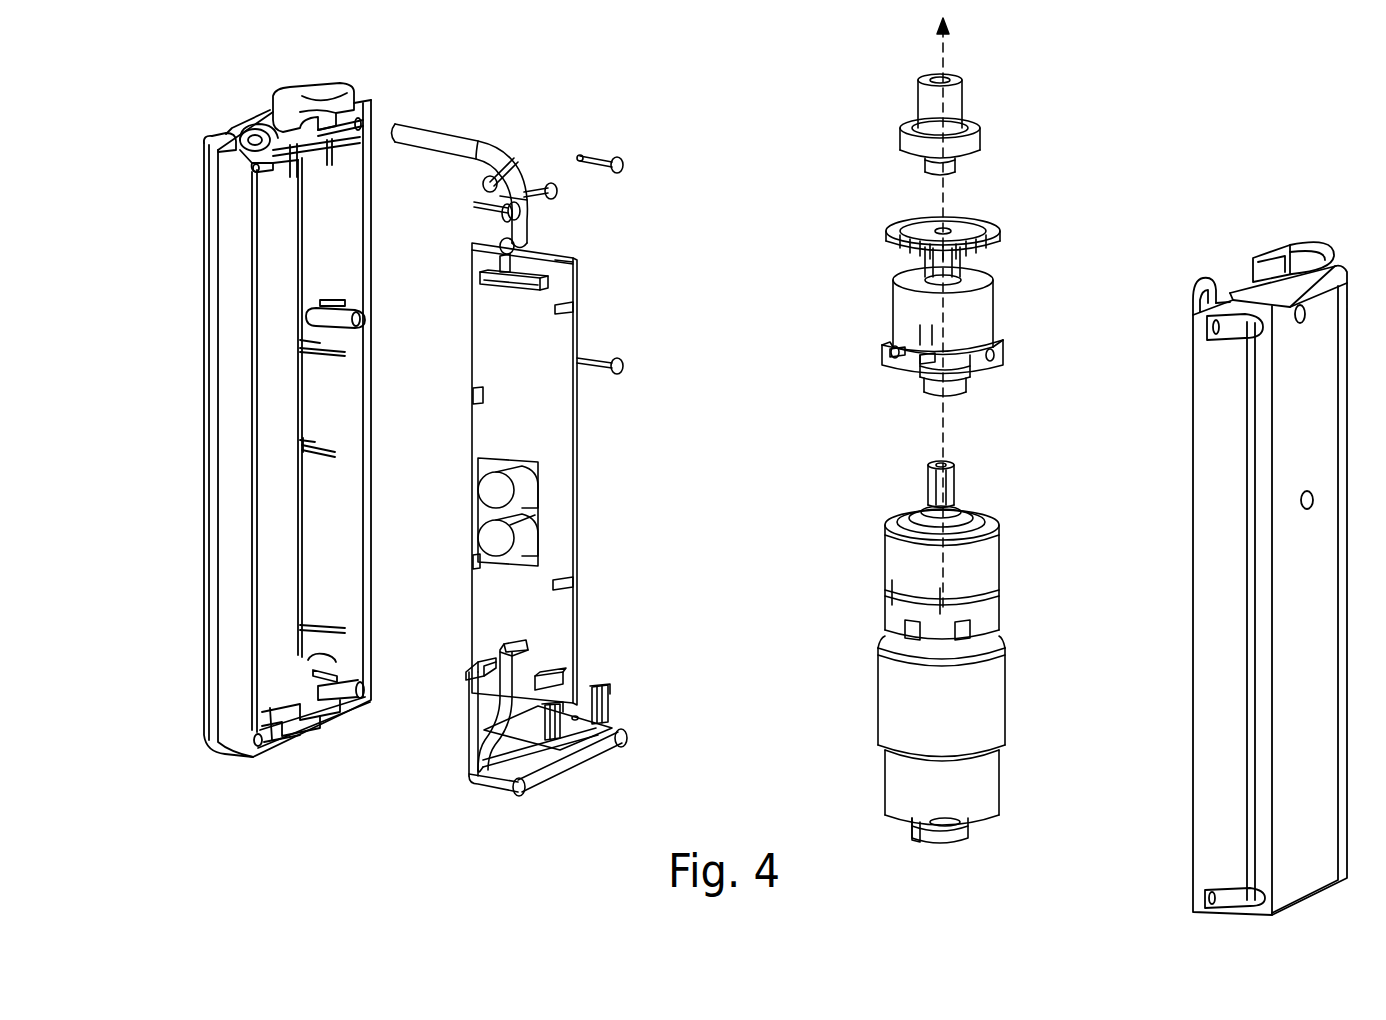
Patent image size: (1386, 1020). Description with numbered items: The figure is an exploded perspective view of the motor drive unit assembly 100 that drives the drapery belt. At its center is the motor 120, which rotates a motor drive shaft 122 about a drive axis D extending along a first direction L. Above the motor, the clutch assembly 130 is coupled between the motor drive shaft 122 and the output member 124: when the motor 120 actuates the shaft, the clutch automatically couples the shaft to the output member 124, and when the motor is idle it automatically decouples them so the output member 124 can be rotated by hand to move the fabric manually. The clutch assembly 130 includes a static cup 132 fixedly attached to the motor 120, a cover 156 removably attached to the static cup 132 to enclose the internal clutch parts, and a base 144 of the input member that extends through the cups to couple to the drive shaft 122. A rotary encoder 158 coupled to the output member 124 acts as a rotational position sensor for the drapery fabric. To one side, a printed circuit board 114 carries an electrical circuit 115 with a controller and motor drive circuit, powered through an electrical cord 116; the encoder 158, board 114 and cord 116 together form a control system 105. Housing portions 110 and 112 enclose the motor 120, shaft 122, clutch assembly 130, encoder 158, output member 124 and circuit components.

The motor drive unit assembly 100 is at (1260, 145).
The control system 105 is at (624, 326).
The housing portion 110 is at (1220, 425).
The housing portion 112 is at (335, 548).
The printed circuit board 114 is at (540, 372).
The electrical circuit 115 is at (548, 437).
The electrical cord 116 is at (455, 150).
The motor 120 is at (910, 697).
The motor drive shaft 122 is at (937, 490).
The output member 124 is at (965, 110).
The clutch assembly 130 is at (852, 298).
The static cup 132 is at (880, 358).
The base 144 is at (938, 392).
The cover 156 is at (975, 315).
The rotary encoder 158 is at (970, 233).